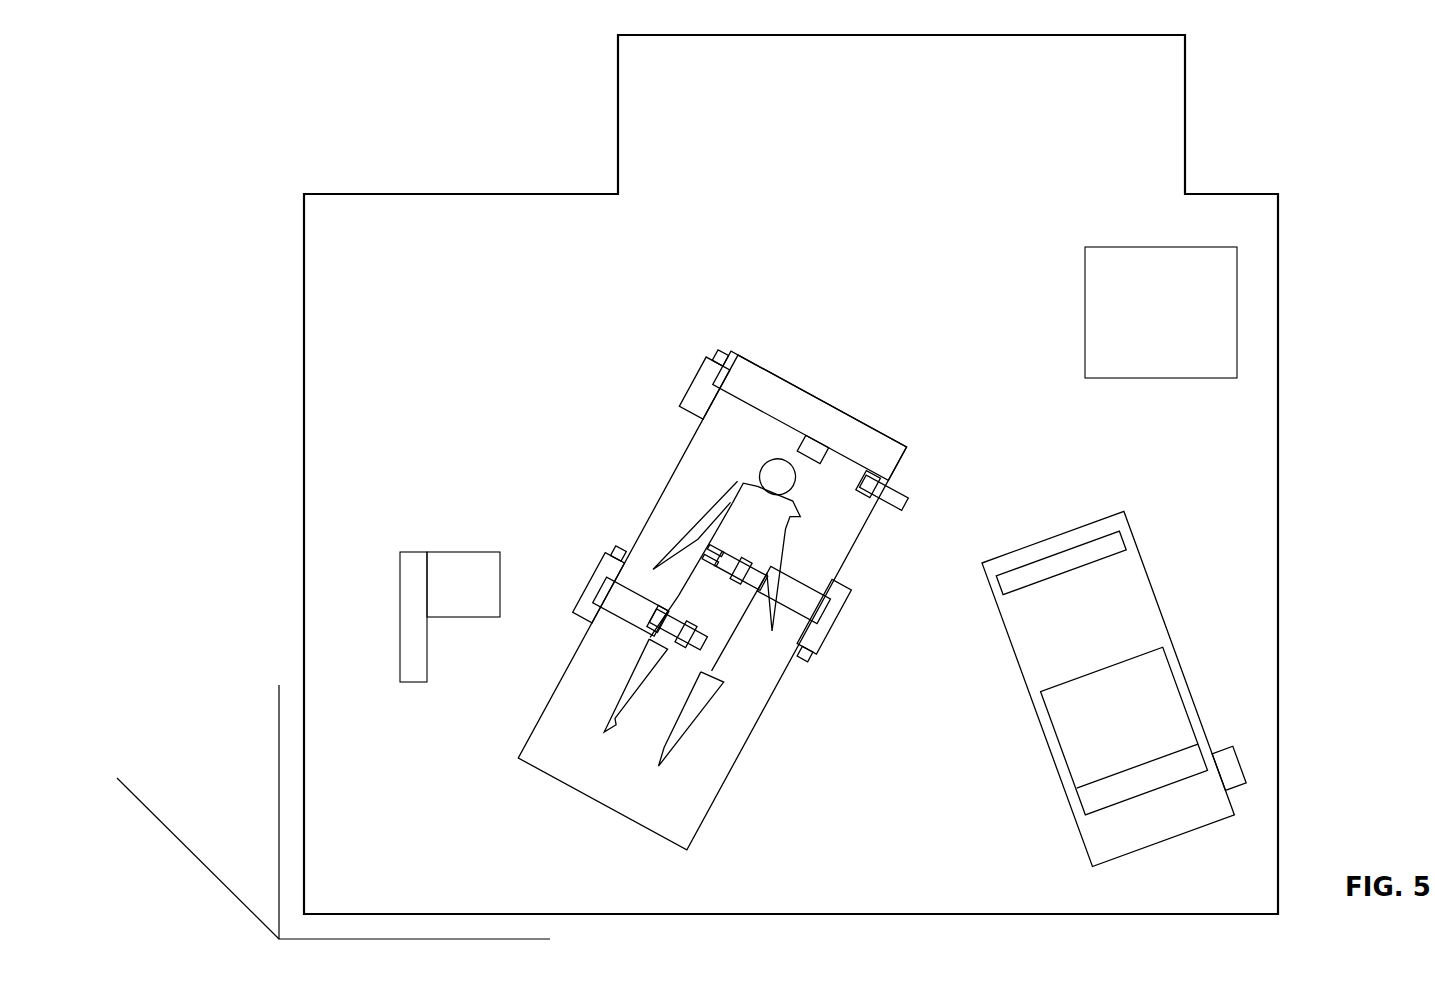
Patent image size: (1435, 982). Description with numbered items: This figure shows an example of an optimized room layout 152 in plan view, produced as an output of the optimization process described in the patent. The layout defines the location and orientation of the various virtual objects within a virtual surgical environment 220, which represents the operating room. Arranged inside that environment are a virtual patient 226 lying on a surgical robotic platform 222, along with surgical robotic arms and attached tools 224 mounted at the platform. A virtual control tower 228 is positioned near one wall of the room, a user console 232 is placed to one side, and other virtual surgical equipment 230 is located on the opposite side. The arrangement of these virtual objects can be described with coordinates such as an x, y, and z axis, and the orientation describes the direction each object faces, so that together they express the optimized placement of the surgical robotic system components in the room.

The optimized room layout 152 is at (758, 489).
The virtual surgical environment 220 is at (1192, 193).
The surgical robotic platform 222 is at (872, 430).
The surgical robotic arms and attached tools 224 is at (841, 483).
The virtual patient 226 is at (747, 513).
The virtual control tower 228 is at (1130, 245).
The other virtual surgical equipment 230 is at (459, 551).
The user console 232 is at (1145, 562).